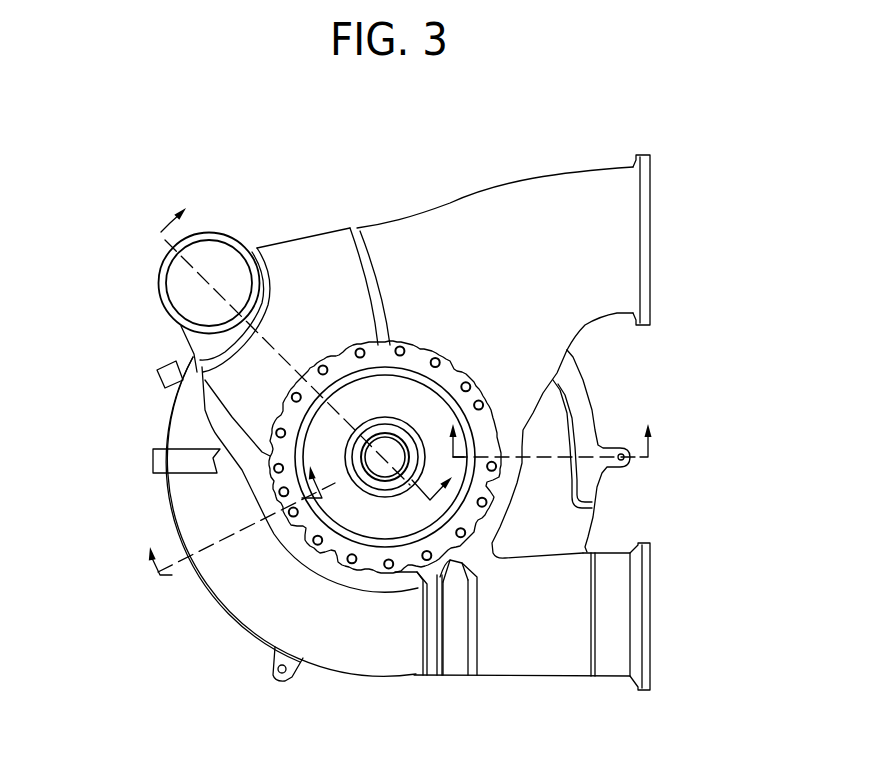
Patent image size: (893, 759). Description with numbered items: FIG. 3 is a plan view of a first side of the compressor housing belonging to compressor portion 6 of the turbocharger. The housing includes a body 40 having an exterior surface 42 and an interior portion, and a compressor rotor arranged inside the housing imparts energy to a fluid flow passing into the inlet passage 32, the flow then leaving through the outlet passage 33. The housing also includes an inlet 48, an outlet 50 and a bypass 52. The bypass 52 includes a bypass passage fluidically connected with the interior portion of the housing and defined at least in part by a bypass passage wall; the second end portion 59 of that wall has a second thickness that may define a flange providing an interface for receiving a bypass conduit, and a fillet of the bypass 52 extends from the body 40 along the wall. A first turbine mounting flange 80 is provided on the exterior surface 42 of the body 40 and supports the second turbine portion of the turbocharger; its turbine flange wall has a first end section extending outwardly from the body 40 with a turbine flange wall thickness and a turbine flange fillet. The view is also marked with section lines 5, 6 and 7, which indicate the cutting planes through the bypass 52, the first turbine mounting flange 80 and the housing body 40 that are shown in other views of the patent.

The section line 5- 5 is at (301, 360).
The compressor portion 6 is at (199, 160).
The section line 7- 7 is at (230, 516).
The inlet passage 32 is at (312, 308).
The outlet passage 33 is at (333, 636).
The body 40 is at (208, 605).
The exterior surface 42 is at (200, 507).
The inlet 48 is at (688, 227).
The outlet 50 is at (690, 599).
The bypass 52 is at (146, 298).
The second end portion 59 is at (167, 266).
The first turbine mounting flange 80 is at (434, 338).